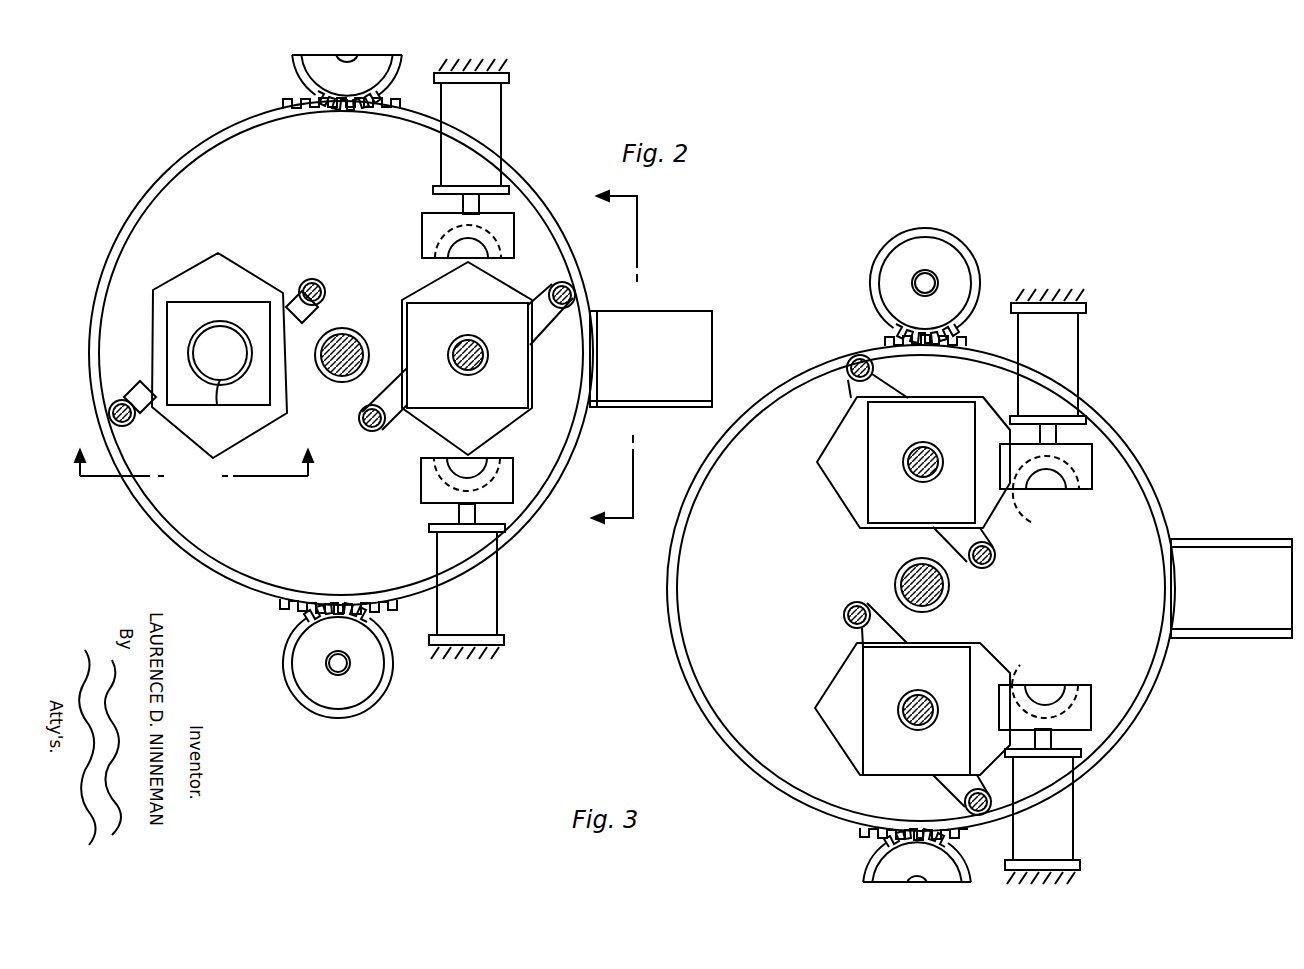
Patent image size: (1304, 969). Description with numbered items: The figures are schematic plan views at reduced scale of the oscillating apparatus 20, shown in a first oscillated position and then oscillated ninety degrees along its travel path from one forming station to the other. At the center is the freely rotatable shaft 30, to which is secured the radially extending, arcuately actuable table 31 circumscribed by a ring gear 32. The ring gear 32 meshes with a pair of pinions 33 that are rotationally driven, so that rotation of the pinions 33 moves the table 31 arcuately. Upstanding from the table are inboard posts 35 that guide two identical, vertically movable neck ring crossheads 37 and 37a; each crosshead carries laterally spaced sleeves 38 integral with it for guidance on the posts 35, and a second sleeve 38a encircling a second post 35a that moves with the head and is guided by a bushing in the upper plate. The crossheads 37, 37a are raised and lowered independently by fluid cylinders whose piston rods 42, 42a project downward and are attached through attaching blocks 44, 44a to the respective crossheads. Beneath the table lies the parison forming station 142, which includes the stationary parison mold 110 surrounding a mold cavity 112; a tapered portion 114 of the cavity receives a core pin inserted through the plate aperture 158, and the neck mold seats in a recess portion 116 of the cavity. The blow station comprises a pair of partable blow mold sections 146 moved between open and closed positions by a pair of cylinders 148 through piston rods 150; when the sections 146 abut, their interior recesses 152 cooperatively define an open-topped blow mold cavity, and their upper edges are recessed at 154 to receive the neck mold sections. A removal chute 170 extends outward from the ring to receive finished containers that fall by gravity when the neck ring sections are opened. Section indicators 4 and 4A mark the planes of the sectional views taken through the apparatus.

In FIG. 2, the oscillating apparatus 20 is at (172, 153).
In FIG. 3, the oscillating apparatus 20 is at (779, 358).
In FIG. 2, the shaft 30 is at (336, 372).
In FIG. 3, the shaft 30 is at (906, 585).
In FIG. 2, the table 31 is at (200, 126).
In FIG. 3, the table 31 is at (1145, 748).
In FIG. 2, the ring gear 32 is at (293, 112).
In FIG. 3, the ring gear 32 is at (886, 343).
In FIG. 2, the pinion 33 is at (296, 72).
In FIG. 3, the pinion 33 is at (884, 250).
In FIG. 2, the inboard post 35 is at (324, 300).
In FIG. 3, the inboard post 35 is at (996, 556).
In FIG. 2, the second post 35a is at (115, 420).
In FIG. 3, the second post 35a is at (875, 368).
In FIG. 2, the neck ring crosshead 37 is at (297, 300).
In FIG. 3, the neck ring crosshead 37 is at (914, 429).
In FIG. 2, the neck ring crosshead 37a is at (528, 382).
In FIG. 3, the neck ring crosshead 37a is at (950, 759).
In FIG. 2, the sleeve 38 is at (326, 295).
In FIG. 3, the sleeve 38 is at (990, 570).
In FIG. 2, the second sleeve 38a is at (552, 290).
In FIG. 3, the second sleeve 38a is at (850, 376).
In FIG. 3, the piston rod 42 is at (922, 474).
In FIG. 2, the piston rod 42a is at (462, 366).
In FIG. 3, the piston rod 42a is at (928, 695).
In FIG. 3, the attaching block 44 is at (928, 448).
In FIG. 2, the attaching block 44a is at (452, 345).
In FIG. 3, the attaching block 44a is at (910, 695).
In FIG. 2, the parison mold 110 is at (236, 303).
In FIG. 2, the mold cavity 112 is at (215, 355).
In FIG. 2, the tapered portion 114 is at (199, 346).
In FIG. 2, the recess portion 116 is at (216, 385).
In FIG. 2, the parison forming station 142 is at (205, 285).
In FIG. 2, the blow mold section 146 is at (515, 245).
In FIG. 3, the blow mold section 146 is at (1093, 458).
In FIG. 2, the cylinder 148 is at (495, 112).
In FIG. 3, the cylinder 148 is at (1080, 345).
In FIG. 2, the piston rod 150 is at (460, 205).
In FIG. 3, the piston rod 150 is at (1050, 432).
In FIG. 2, the recess 152 is at (470, 240).
In FIG. 3, the recess 152 is at (1032, 518).
In FIG. 2, the recessed upper edge 154 is at (448, 250).
In FIG. 3, the recessed upper edge 154 is at (1052, 495).
In FIG. 2, the plate aperture 158 is at (188, 265).
In FIG. 3, the plate aperture 158 is at (820, 505).
In FIG. 2, the removal chute 170 is at (660, 318).
In FIG. 3, the removal chute 170 is at (1215, 548).
In FIG. 2, the section line 4- 4 is at (195, 485).
In FIG. 2, the section line 4A- 4A is at (631, 361).